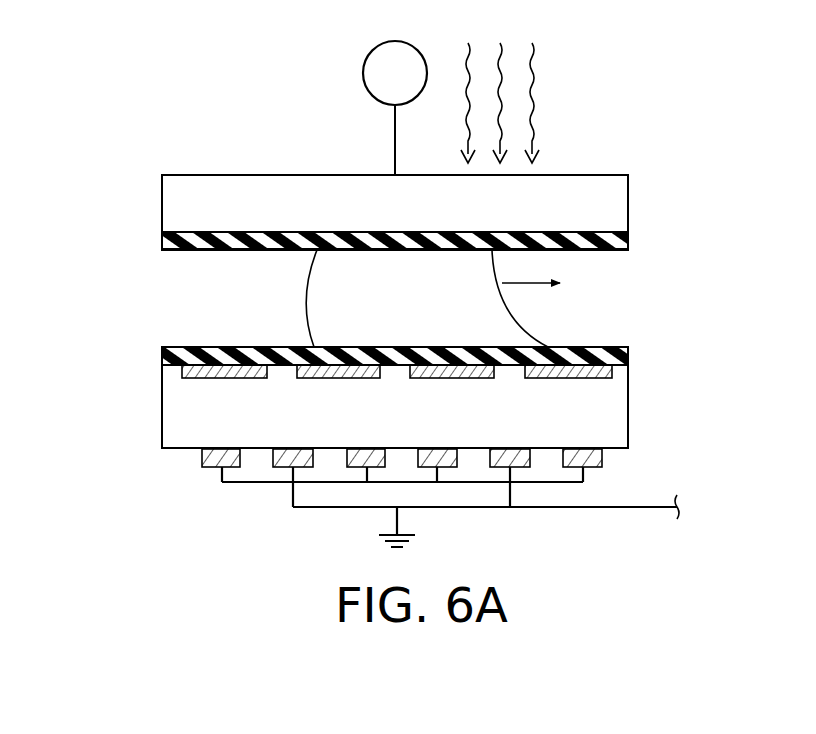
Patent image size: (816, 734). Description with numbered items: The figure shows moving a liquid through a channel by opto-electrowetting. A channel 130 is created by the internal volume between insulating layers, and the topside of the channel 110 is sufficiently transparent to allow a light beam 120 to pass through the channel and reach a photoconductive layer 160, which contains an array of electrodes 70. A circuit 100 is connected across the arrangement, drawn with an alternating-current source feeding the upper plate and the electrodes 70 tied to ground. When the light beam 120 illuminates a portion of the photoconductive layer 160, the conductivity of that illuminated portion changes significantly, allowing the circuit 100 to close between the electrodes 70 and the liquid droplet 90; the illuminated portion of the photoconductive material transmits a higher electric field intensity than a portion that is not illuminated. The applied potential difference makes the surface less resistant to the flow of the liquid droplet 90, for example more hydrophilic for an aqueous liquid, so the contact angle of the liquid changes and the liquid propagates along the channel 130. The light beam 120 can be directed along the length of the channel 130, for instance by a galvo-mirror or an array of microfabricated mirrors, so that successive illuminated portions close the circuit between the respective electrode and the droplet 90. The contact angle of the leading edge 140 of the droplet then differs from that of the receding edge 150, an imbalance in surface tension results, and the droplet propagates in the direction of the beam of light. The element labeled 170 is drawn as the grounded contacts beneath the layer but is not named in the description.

The electrodes 70 is at (316, 379).
The liquid droplet 90 is at (305, 274).
The circuit 100 is at (357, 67).
The topside of the channel 110 is at (628, 186).
The light beam 120 is at (548, 56).
The channel 130 is at (178, 290).
The leading edge 140 is at (557, 333).
The receding edge 150 is at (306, 340).
The photoconductive layer 160 is at (628, 415).
The grounded contacts 170 is at (206, 468).